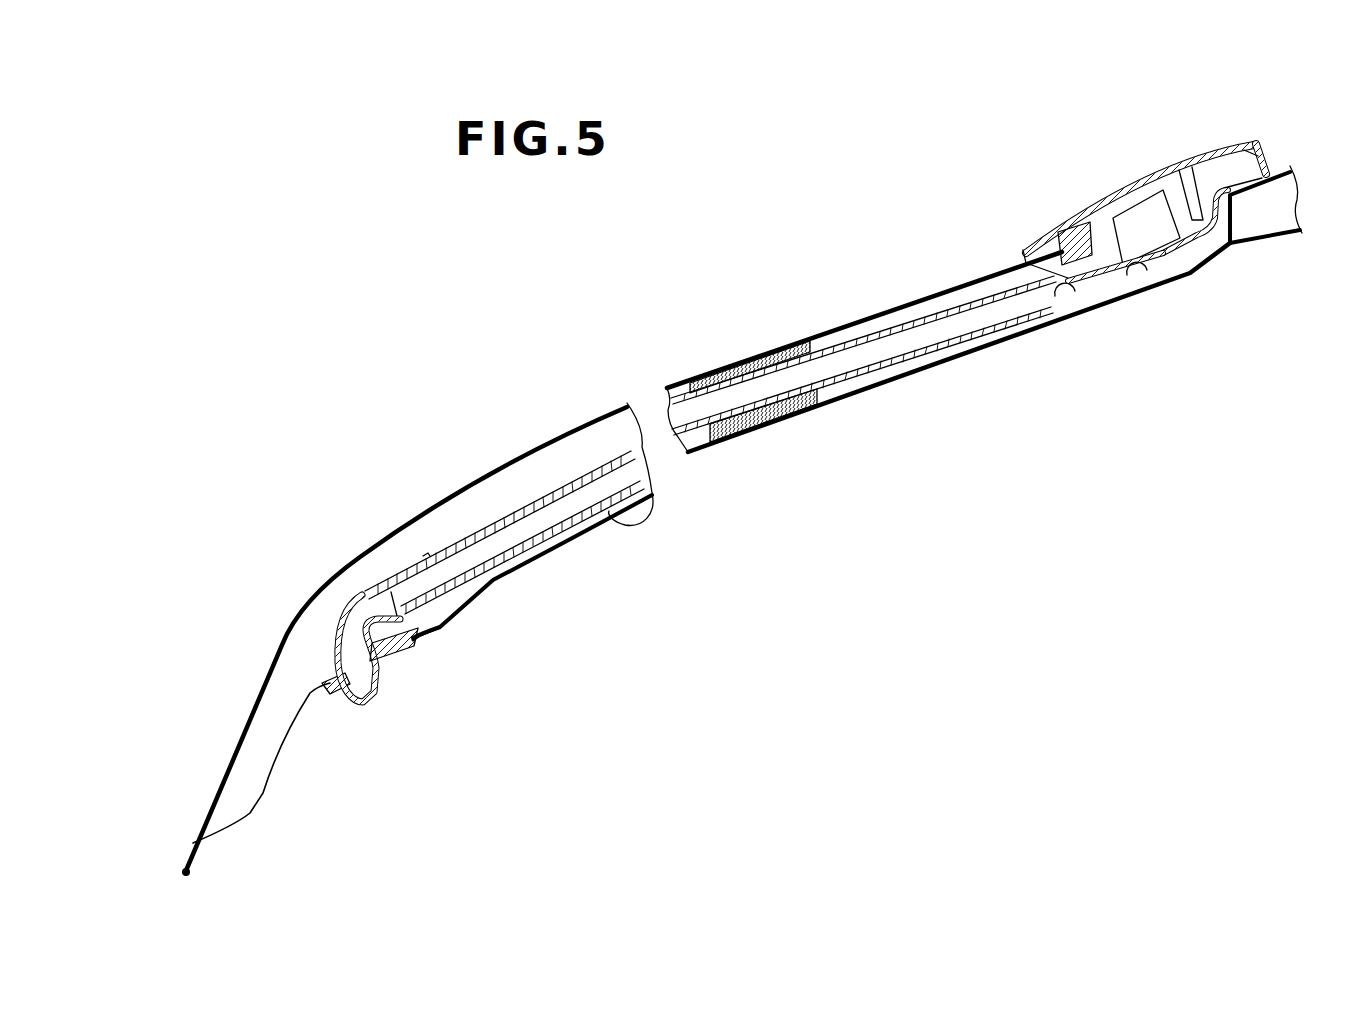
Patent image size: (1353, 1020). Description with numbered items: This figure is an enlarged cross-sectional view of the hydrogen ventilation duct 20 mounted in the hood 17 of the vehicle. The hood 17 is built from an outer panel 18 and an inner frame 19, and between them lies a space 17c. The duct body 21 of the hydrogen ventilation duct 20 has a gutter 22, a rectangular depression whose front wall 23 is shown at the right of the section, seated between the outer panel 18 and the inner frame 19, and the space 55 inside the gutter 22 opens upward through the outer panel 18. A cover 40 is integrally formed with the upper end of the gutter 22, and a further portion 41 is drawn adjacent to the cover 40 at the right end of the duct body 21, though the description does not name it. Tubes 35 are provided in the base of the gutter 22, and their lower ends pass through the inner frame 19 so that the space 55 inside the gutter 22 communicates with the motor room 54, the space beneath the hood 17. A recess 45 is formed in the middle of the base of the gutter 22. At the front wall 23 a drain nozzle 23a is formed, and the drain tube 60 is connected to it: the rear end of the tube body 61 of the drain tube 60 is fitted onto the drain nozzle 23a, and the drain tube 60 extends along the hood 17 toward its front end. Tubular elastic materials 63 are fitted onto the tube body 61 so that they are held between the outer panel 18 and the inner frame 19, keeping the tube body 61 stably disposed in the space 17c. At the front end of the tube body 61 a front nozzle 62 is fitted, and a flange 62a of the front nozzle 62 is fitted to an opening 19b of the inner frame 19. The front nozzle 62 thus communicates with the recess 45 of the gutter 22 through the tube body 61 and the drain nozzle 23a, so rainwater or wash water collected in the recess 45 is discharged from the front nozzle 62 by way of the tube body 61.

The hood 17 is at (611, 322).
The space 17c is at (503, 485).
The outer panel 18 is at (547, 443).
The inner frame 19 is at (610, 503).
The opening 19b is at (420, 640).
The hydrogen ventilation duct 20 is at (873, 138).
The duct body 21 is at (1129, 165).
The gutter 22 is at (1213, 270).
The front wall 23 is at (1100, 230).
The drain nozzle 23a is at (1077, 318).
The tube 35 is at (1153, 213).
The cover 40 is at (1207, 150).
The pipe 41 is at (1270, 150).
The recess 45 is at (1153, 288).
The motor room 54 is at (1003, 551).
The space 55 is at (1093, 203).
The drain tube 60 is at (847, 313).
The tube body 61 is at (913, 353).
The front nozzle 62 is at (353, 597).
The flange 62a is at (397, 650).
The tubular elastic material 63 is at (760, 430).